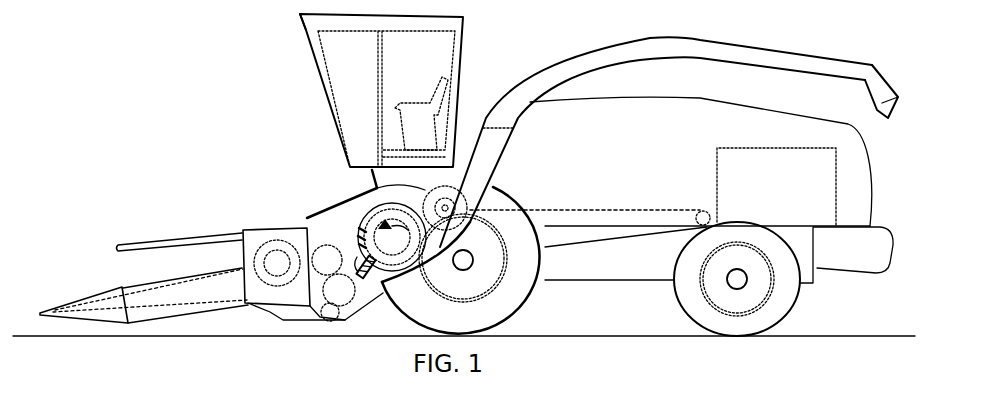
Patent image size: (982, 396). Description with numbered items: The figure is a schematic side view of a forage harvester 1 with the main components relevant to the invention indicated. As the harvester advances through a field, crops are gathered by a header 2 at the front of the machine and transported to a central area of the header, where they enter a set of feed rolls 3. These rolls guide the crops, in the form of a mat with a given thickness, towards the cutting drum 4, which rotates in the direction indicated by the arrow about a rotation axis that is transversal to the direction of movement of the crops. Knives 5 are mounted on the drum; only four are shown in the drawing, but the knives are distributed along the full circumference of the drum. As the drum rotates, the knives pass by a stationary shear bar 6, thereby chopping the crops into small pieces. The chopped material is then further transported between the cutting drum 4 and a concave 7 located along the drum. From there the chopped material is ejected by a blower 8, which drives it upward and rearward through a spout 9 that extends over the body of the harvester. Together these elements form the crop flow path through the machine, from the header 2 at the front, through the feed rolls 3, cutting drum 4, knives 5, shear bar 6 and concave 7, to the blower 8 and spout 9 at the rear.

The forage harvester 1 is at (146, 88).
The header 2 is at (242, 233).
The feed rolls 3 is at (330, 255).
The cutting drum 4 is at (362, 235).
The knives 5 is at (367, 262).
The shear bar 6 is at (357, 257).
The concave 7 is at (430, 262).
The blower 8 is at (457, 190).
The spout 9 is at (570, 60).